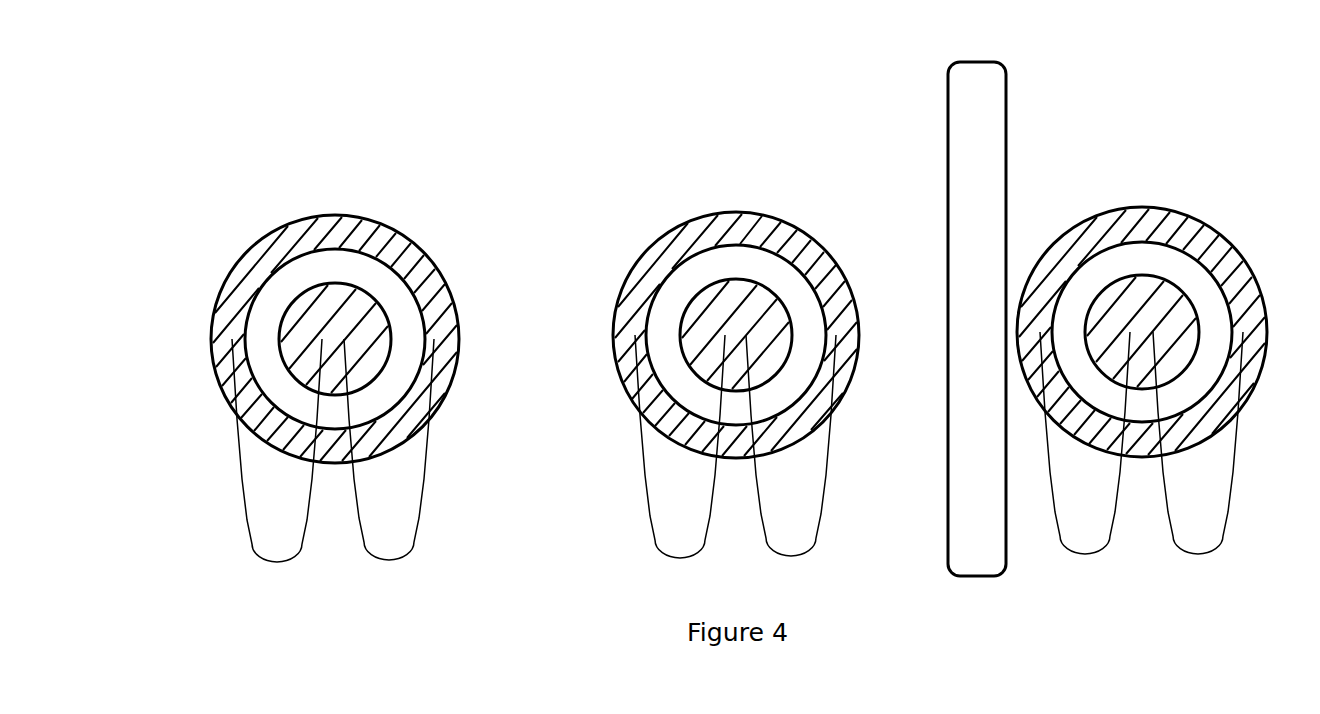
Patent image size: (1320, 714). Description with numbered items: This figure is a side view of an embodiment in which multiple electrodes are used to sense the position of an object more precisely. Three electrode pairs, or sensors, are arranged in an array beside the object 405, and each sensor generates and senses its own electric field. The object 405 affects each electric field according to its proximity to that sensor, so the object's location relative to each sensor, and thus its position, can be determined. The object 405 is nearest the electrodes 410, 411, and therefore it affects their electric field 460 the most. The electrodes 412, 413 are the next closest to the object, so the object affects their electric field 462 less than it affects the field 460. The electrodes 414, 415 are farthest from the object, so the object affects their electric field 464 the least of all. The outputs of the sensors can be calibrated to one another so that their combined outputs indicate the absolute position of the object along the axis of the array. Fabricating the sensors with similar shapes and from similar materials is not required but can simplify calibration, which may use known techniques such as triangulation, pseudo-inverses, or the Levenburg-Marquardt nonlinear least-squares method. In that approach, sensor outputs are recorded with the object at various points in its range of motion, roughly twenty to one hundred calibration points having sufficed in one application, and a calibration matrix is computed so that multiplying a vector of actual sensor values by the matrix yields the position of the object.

The object 405 is at (1006, 107).
The electrode 410 is at (1143, 207).
The electrode 411 is at (1188, 353).
The electrode 412 is at (753, 212).
The electrode 413 is at (702, 293).
The electrode 414 is at (302, 298).
The electrode 415 is at (353, 215).
The electric field 460 is at (1178, 520).
The electric field 462 is at (650, 488).
The electric field 464 is at (247, 493).